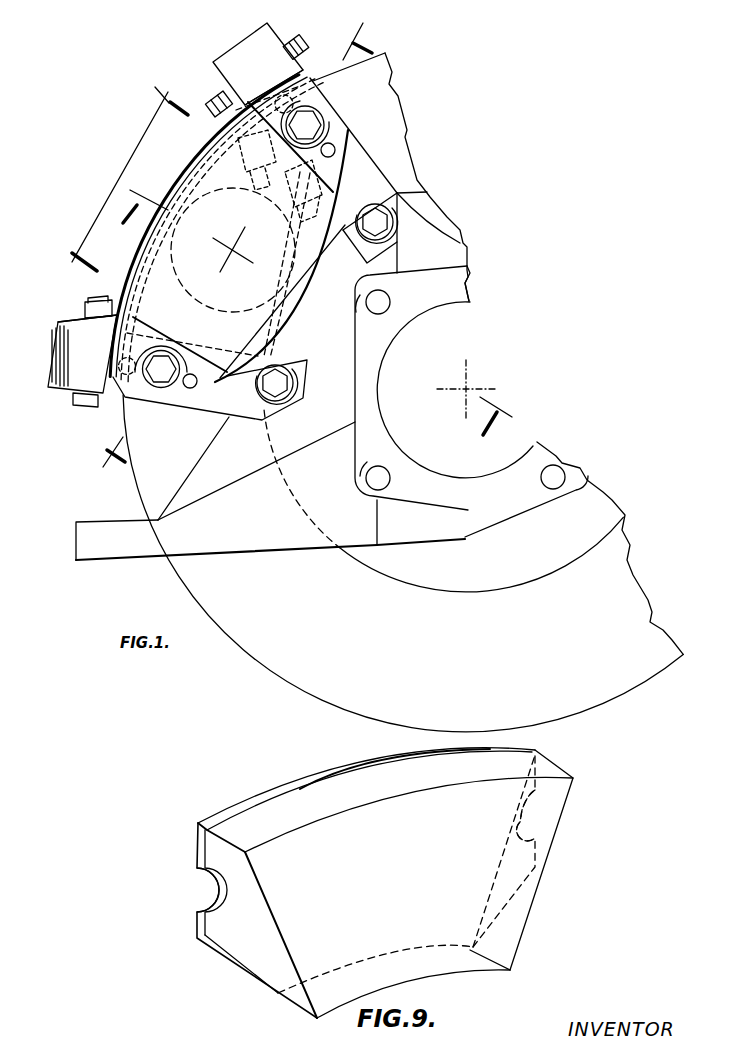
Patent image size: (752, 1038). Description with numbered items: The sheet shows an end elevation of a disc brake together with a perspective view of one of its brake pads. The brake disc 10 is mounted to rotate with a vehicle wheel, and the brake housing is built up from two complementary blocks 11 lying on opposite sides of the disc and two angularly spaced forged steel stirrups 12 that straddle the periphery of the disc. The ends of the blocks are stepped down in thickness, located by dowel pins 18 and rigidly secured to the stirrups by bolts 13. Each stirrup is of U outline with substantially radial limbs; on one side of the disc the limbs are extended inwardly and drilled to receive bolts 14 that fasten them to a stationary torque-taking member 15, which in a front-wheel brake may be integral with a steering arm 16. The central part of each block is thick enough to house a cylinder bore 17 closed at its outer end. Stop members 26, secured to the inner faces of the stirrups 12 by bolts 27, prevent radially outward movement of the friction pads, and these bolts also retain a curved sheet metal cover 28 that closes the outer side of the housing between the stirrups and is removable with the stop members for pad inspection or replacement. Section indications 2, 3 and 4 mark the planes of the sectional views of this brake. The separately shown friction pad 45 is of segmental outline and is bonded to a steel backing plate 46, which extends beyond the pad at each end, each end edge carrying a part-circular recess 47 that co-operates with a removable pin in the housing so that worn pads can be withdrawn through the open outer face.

In FIG. 1, the brake disc 10 is at (252, 640).
In FIG. 1, the complementary blocks 11 is at (178, 190).
In FIG. 1, the forged steel stirrups 12 is at (272, 43).
In FIG. 1, the bolts 13 is at (313, 122).
In FIG. 1, the bolts 14 is at (383, 210).
In FIG. 1, the torque-taking member 15 is at (350, 383).
In FIG. 1, the steering arm 16 is at (126, 550).
In FIG. 1, the cylinder bore 17 is at (196, 253).
In FIG. 1, the dowel pins 18 is at (334, 150).
In FIG. 1, the stop members 26 is at (222, 85).
In FIG. 1, the bolts 27 is at (213, 102).
In FIG. 1, the curved sheet metal cover 28 is at (186, 160).
In FIG. 1, the section line 2- 2 is at (318, 308).
In FIG. 1, the section line 3- 3 is at (231, 245).
In FIG. 1, the section line 4- 4 is at (117, 179).
In FIG. 9, the friction pad 45 is at (447, 927).
In FIG. 9, the steel backing plate 46 is at (260, 793).
In FIG. 9, the part-circular recess 47 is at (216, 887).